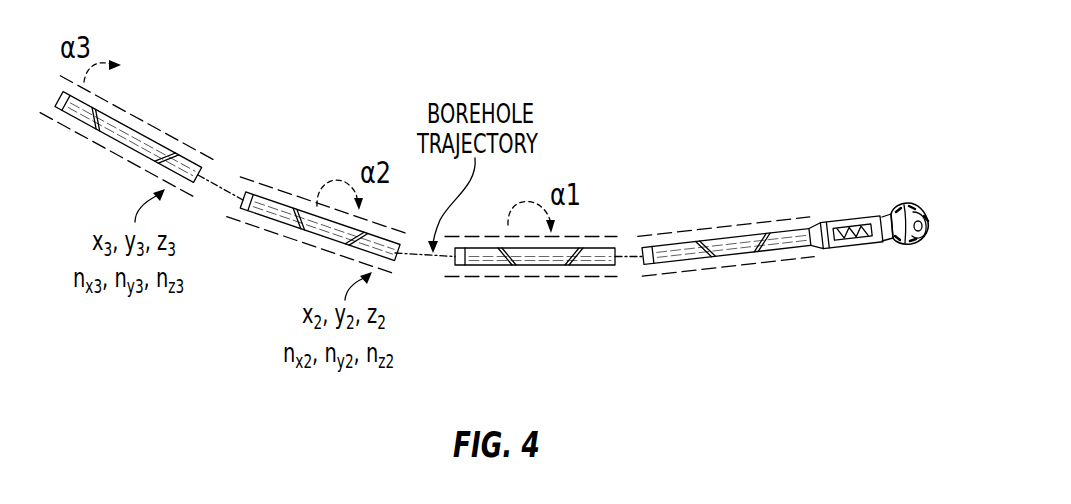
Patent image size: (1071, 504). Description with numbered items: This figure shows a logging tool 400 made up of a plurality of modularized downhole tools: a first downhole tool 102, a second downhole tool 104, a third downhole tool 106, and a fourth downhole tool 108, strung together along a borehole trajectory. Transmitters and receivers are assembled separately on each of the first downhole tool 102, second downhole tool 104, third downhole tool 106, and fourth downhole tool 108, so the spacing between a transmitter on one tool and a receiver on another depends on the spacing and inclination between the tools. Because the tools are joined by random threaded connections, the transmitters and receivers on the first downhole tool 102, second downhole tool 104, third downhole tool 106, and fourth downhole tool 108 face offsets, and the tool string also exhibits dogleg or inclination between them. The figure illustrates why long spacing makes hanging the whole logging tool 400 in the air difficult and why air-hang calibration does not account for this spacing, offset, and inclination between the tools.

The first downhole tool 102 is at (723, 241).
The second downhole tool 104 is at (595, 246).
The third downhole tool 106 is at (268, 200).
The fourth downhole tool 108 is at (131, 123).
The logging tool 400 is at (490, 184).